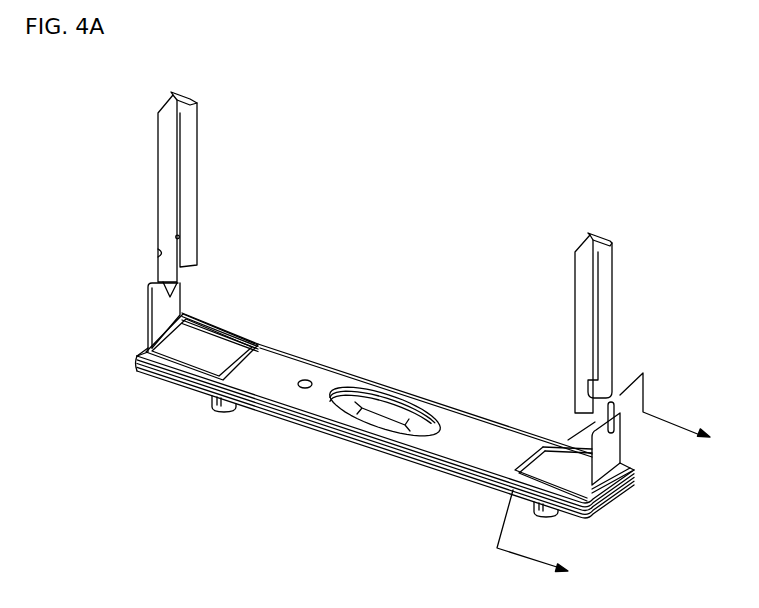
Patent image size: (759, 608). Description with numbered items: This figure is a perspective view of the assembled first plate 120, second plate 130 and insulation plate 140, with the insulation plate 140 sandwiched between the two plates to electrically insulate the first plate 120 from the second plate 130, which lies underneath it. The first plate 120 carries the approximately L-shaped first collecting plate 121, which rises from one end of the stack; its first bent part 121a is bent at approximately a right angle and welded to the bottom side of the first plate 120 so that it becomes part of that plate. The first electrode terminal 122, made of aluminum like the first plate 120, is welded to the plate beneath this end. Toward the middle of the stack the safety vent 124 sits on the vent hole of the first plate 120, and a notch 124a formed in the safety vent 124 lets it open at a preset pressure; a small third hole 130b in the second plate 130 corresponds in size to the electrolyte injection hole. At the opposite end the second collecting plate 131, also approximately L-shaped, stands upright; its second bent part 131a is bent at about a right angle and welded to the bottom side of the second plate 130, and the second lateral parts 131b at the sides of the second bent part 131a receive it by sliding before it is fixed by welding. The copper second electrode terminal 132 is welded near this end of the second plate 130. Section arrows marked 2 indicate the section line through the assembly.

The first plate 120 is at (385, 389).
The first collecting plate 121 is at (160, 311).
The first bent part 121a is at (207, 350).
The first electrode terminal 122 is at (212, 395).
The safety vent 124 is at (393, 407).
The notch 124a is at (403, 426).
The second plate 130 is at (279, 366).
The third hole 130b is at (310, 380).
The second collecting plate 131 is at (636, 471).
The second bent part 131a is at (542, 458).
The second lateral parts 131b is at (550, 437).
The second electrode terminal 132 is at (545, 517).
The insulation plate 140 is at (307, 424).
The section line 2 is at (613, 480).